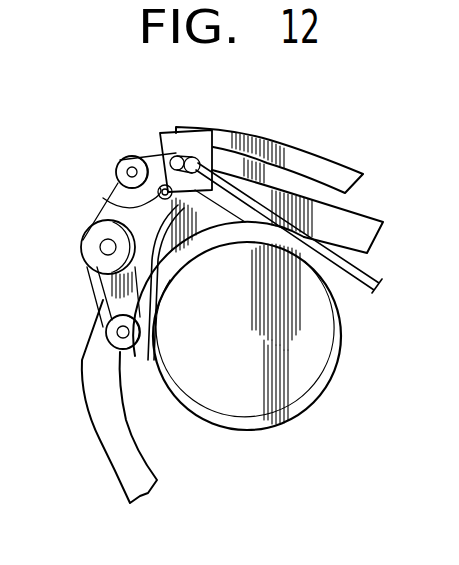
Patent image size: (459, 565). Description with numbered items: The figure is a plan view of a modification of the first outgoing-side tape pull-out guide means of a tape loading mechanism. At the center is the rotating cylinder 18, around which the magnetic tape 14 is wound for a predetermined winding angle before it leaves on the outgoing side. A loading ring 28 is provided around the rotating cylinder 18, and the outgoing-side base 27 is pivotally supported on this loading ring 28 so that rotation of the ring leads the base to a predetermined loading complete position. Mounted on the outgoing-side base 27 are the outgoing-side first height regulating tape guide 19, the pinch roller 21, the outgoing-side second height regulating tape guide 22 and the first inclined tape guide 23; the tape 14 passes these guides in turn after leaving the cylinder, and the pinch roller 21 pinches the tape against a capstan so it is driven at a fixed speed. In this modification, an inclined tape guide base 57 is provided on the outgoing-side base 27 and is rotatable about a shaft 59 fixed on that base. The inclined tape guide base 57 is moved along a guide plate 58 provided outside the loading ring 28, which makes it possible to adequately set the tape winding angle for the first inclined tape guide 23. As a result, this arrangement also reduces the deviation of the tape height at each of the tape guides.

The magnetic tape 14 is at (358, 280).
The rotating cylinder 18 is at (247, 390).
The outgoing-side first height regulating tape guide 19 is at (118, 333).
The pinch roller 21 is at (93, 256).
The outgoing-side second height regulating tape guide 22 is at (127, 171).
The first inclined tape guide 23 is at (175, 152).
The outgoing-side base 27 is at (168, 292).
The loading ring 28 is at (132, 467).
The inclined tape guide base 57 is at (196, 248).
The guide plate 58 is at (293, 157).
The shaft 59 is at (103, 198).